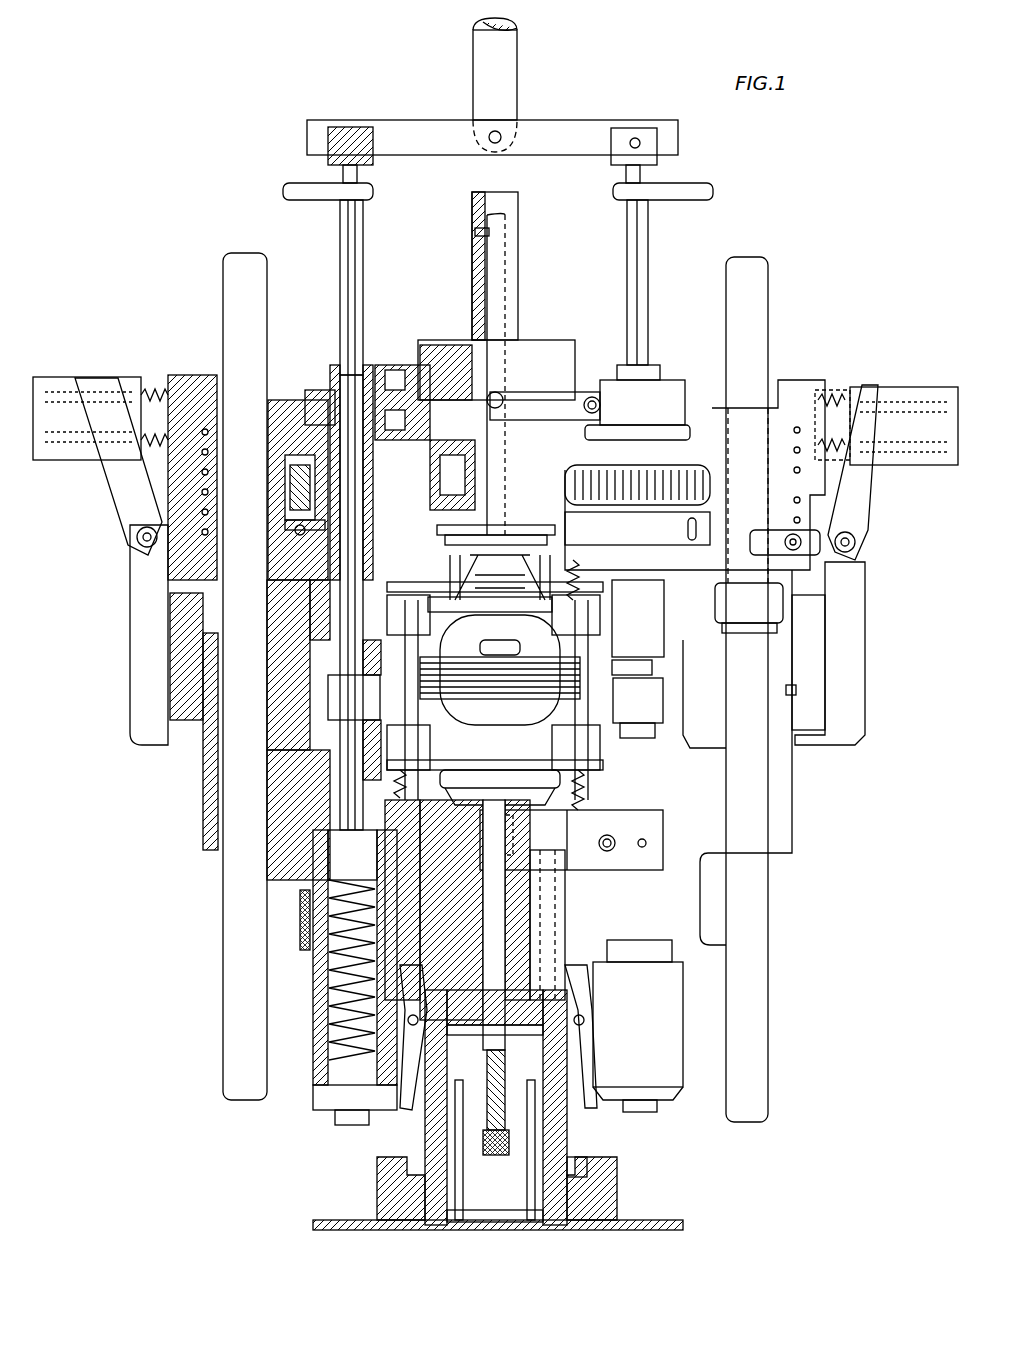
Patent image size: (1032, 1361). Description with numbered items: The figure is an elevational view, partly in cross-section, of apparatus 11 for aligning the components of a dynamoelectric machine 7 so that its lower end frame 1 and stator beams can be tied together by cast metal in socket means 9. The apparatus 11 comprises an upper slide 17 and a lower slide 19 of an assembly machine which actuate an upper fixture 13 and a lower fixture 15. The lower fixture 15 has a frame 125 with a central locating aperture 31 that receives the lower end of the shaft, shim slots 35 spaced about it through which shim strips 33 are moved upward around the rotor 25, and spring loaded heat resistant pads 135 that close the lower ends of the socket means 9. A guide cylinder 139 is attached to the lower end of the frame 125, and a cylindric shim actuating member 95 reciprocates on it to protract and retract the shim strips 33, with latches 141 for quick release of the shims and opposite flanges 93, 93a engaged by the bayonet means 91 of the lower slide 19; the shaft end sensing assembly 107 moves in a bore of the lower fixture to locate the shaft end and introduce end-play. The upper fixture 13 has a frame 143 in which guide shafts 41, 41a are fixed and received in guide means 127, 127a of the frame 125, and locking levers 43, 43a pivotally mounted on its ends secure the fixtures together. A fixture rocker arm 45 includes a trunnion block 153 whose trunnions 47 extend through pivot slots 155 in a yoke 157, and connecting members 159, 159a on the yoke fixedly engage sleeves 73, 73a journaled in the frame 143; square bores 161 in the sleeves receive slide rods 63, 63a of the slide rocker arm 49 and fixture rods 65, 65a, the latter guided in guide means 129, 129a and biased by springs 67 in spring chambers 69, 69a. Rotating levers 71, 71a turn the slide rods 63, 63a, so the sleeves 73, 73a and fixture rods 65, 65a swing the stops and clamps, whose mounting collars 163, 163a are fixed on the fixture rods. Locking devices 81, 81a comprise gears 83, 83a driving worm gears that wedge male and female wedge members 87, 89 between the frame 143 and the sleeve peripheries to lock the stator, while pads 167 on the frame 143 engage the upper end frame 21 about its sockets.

The end frame 1 is at (506, 746).
The dynamoelectric machine 7 is at (543, 690).
The socket means 9 is at (600, 622).
The apparatus 11 is at (240, 228).
The upper assembly fixture 13 is at (802, 360).
The lower assembly fixture 15 is at (827, 853).
The upper slide 17 is at (560, 76).
The lower slide 19 is at (693, 1212).
The upper end frame 21 is at (602, 610).
The rotor 25 is at (442, 471).
The locating aperture 31 is at (513, 838).
The shim strips 33 is at (491, 568).
The slots 35 is at (430, 930).
The guide shaft 41 is at (223, 288).
The guide shaft 41a is at (768, 278).
The fixture locking lever 43 is at (130, 630).
The fixture locking lever 43a is at (865, 643).
The rocker arm mechanism 45 is at (553, 370).
The trunnions 47 is at (502, 395).
The rocker arm mechanism 49 is at (603, 99).
The slide rod 63 is at (340, 263).
The slide rod 63a is at (648, 278).
The fixture rod 65 is at (330, 592).
The fixture rod 65a is at (652, 666).
The spring 67 is at (325, 1008).
The spring chamber 69 is at (313, 1045).
The spring chamber 69a is at (675, 1070).
The rotating lever 71 is at (322, 195).
The rotating lever 71a is at (700, 197).
The sleeve 73 is at (320, 652).
The sleeve 73a is at (655, 620).
The locking device 81 is at (276, 450).
The locking device 81a is at (716, 454).
The gear 83 is at (290, 488).
The gear 83a is at (708, 490).
The male wedge member 87 is at (320, 528).
The female wedge member 89 is at (295, 528).
The bayonet means 91 is at (617, 1178).
The flange 93 is at (395, 1179).
The flange 93a is at (580, 1160).
The shim actuating member 95 is at (425, 1131).
The shaft end sensing assembly 107 is at (500, 1168).
The frame 125 is at (792, 830).
The guide means 127 is at (185, 655).
The guide means 127a is at (760, 620).
The guide means 129 is at (330, 776).
The guide means 129a is at (655, 735).
The heat resistant pads 135 is at (605, 775).
The guide cylinder 139 is at (478, 897).
The latches 141 is at (592, 1040).
The frame 143 is at (185, 375).
The trunnion block 153 is at (420, 385).
The pivot slots 155 is at (505, 405).
The yoke 157 is at (594, 395).
The pivotal connecting member 159 is at (315, 390).
The pivotal connecting member 159a is at (678, 395).
The square bore 161 is at (362, 375).
The mounting collar 163 is at (340, 702).
The mounting collar 163a is at (663, 700).
The heat resistant pads 167 is at (583, 595).